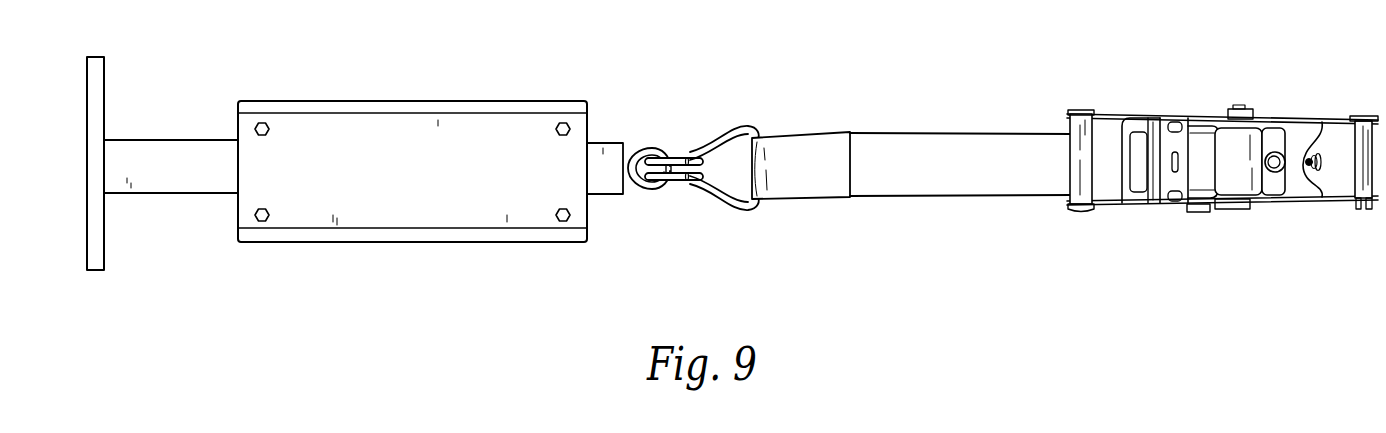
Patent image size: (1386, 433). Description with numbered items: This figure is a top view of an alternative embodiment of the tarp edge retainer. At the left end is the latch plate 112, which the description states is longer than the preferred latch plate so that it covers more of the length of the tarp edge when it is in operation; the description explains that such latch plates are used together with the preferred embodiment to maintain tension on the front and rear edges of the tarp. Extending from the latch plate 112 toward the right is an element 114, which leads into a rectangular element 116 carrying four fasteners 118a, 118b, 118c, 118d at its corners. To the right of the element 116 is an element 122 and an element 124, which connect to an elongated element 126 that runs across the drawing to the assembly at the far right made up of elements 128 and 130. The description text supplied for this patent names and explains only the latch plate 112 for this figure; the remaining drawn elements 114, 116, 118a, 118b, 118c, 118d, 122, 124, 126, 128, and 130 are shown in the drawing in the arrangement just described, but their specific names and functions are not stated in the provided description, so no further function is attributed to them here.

The latch plate 112 is at (87, 150).
The shaft 114 is at (164, 166).
The housing 116 is at (437, 230).
The fastener 118a is at (263, 122).
The fastener 118b is at (262, 222).
The fastener 118c is at (563, 222).
The fastener 118d is at (567, 122).
The ring 122 is at (650, 148).
The hook 124 is at (652, 192).
The strap 126 is at (921, 150).
The ratchet handle 128 is at (1138, 205).
The release lever 130 is at (1243, 205).